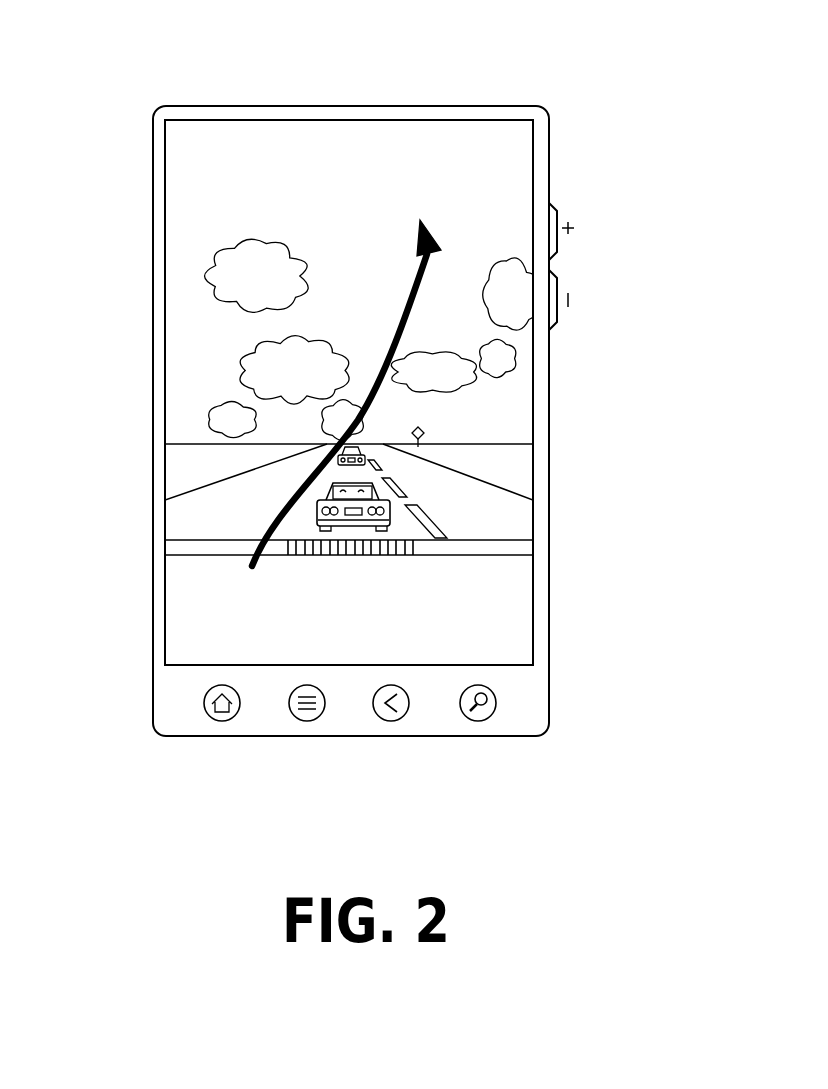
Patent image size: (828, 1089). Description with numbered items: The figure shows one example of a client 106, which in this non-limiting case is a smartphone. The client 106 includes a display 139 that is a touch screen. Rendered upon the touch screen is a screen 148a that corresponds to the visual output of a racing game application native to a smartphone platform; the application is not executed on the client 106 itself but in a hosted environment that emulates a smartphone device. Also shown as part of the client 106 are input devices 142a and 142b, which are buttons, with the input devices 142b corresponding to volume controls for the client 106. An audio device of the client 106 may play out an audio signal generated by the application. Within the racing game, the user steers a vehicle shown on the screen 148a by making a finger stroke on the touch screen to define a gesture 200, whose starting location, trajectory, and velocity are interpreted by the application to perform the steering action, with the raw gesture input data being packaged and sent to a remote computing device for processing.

The client 106 is at (574, 795).
The display 139 is at (253, 119).
The screen 148a is at (496, 153).
The input device 142a is at (225, 712).
The input devices 142b is at (580, 228).
The gesture 200 is at (342, 375).